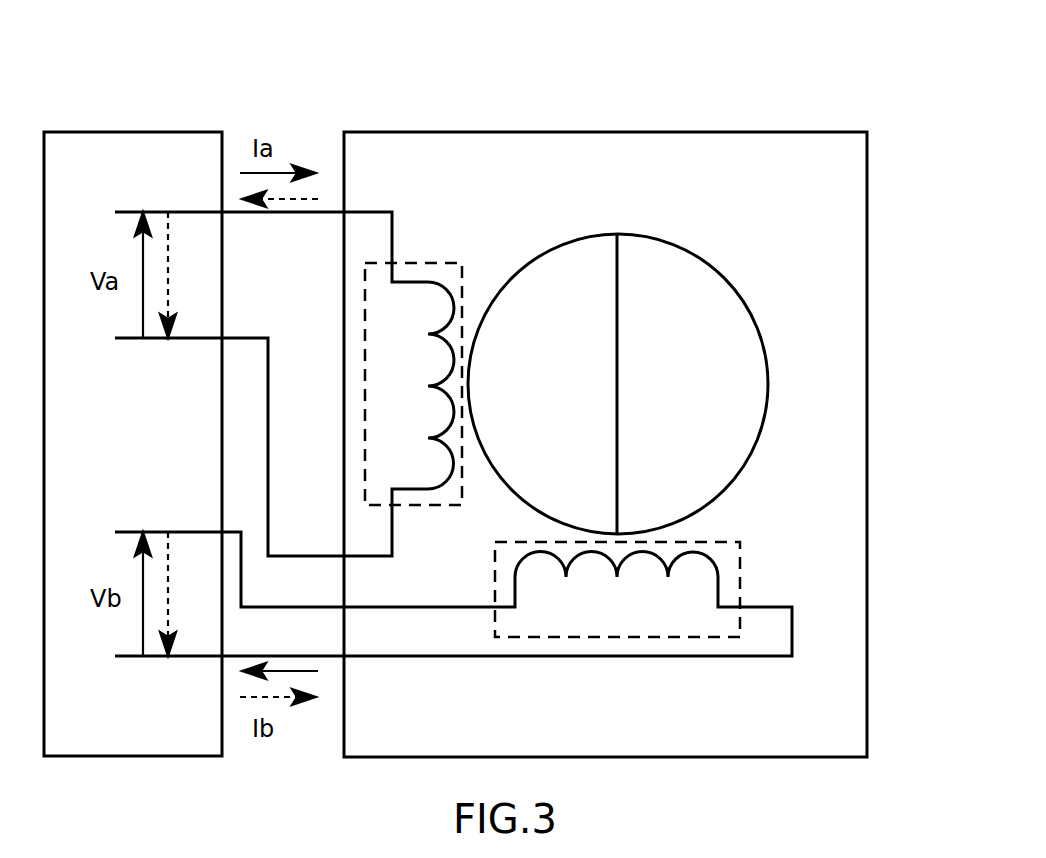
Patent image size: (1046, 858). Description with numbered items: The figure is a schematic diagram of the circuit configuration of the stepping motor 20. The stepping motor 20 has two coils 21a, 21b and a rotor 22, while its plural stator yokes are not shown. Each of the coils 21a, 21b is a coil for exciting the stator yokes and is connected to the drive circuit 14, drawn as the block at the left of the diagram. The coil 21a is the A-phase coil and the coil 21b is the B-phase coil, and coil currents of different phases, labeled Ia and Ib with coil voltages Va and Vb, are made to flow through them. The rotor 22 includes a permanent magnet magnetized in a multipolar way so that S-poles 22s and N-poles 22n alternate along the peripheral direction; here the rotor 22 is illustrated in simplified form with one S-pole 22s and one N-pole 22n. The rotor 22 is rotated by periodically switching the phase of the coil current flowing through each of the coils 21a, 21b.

The drive circuit 14 is at (157, 126).
The stepping motor 20 is at (708, 128).
The coil 21a is at (432, 255).
The coil 21b is at (741, 571).
The rotor 22 is at (716, 261).
The S-pole 22s is at (550, 288).
The N-pole 22n is at (709, 438).